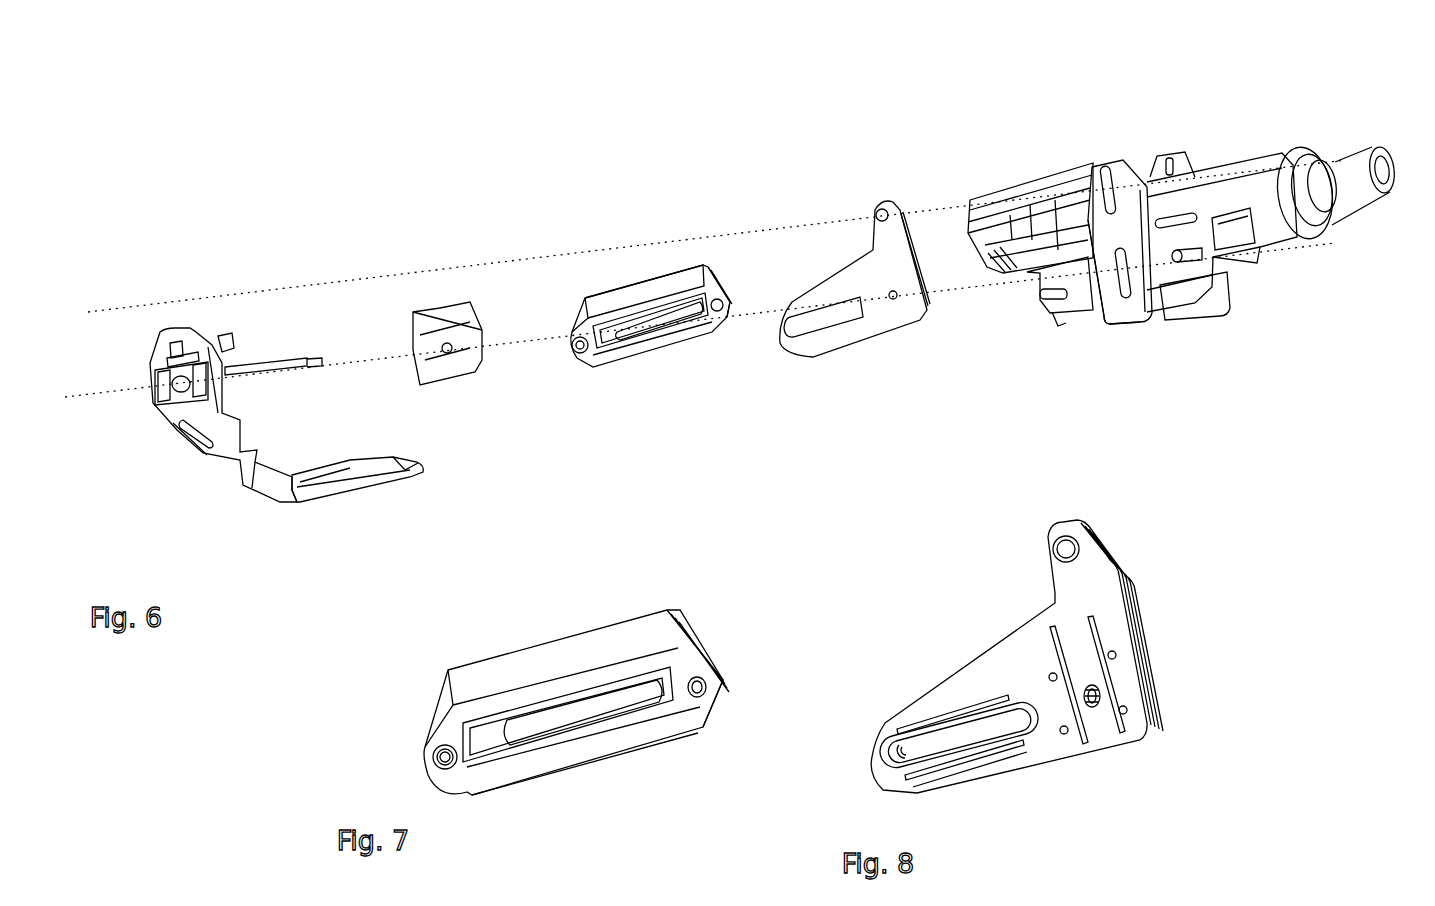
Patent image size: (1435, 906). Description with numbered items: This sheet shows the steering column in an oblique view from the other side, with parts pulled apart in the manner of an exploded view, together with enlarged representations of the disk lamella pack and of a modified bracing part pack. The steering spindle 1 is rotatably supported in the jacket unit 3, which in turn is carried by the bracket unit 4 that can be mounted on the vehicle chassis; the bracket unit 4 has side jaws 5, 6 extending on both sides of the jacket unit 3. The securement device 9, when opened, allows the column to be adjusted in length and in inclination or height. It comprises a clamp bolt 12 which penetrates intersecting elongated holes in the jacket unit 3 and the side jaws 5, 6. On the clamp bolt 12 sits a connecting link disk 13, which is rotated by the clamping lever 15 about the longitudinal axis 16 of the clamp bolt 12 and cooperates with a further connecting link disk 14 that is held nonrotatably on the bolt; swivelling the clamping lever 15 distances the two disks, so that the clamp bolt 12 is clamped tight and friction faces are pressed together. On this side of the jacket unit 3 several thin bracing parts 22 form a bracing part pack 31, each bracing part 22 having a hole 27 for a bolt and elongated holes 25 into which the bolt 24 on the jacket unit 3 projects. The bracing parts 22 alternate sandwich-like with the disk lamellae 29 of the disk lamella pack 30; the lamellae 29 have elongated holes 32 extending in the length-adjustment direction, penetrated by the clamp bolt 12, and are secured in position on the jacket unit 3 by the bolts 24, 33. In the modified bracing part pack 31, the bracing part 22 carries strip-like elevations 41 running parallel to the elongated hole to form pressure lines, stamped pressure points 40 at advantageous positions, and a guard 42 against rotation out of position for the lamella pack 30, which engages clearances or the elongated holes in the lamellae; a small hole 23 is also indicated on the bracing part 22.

In FIG. 6, the steering spindle 1 is at (1335, 183).
In FIG. 6, the jacket unit 3 is at (1182, 239).
In FIG. 6, the bracket unit 4 is at (1177, 140).
In FIG. 6, the side jaw 5 is at (1212, 300).
In FIG. 6, the side jaw 6 is at (1123, 315).
In FIG. 6, the securement device 9 is at (197, 473).
In FIG. 6, the clamp bolt 12 is at (287, 363).
In FIG. 6, the connecting link disk 13 is at (229, 345).
In FIG. 6, the further connecting link disk 14 is at (440, 345).
In FIG. 6, the clamping lever 15 is at (262, 473).
In FIG. 6, the longitudinal axis 16 is at (107, 397).
In FIG. 6, the bracing part 22 is at (863, 277).
In FIG. 8, the bracing part 22 is at (1127, 688).
In FIG. 6, the hole 23 is at (893, 300).
In FIG. 8, the hole 23 is at (1093, 700).
In FIG. 6, the bolt 24 is at (1050, 300).
In FIG. 6, the elongated hole 25 is at (810, 327).
In FIG. 8, the elongated hole 25 is at (957, 742).
In FIG. 6, the hole 27 is at (882, 208).
In FIG. 8, the hole 27 is at (1078, 550).
In FIG. 6, the disk lamella 29 is at (683, 280).
In FIG. 7, the disk lamella 29 is at (752, 647).
In FIG. 6, the disk lamella pack 30 is at (648, 365).
In FIG. 7, the disk lamella pack 30 is at (604, 665).
In FIG. 6, the bracing part pack 31 is at (873, 293).
In FIG. 8, the bracing part pack 31 is at (1059, 666).
In FIG. 6, the elongated hole 32 is at (650, 323).
In FIG. 7, the elongated hole 32 is at (590, 707).
In FIG. 6, the bolt 33 is at (1190, 262).
In FIG. 8, the pressure points 40 is at (1064, 732).
In FIG. 8, the strip-like elevations 41 is at (1130, 660).
In FIG. 8, the guard against rotation out of position 42 is at (990, 760).